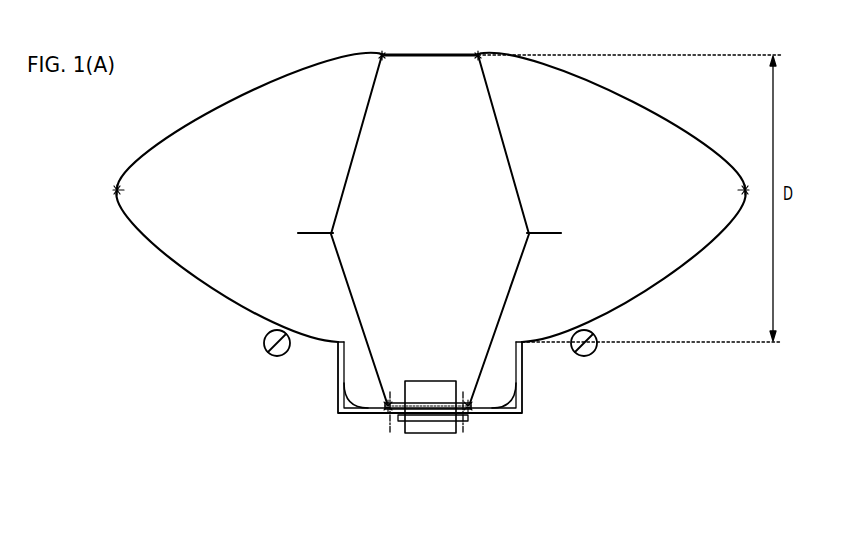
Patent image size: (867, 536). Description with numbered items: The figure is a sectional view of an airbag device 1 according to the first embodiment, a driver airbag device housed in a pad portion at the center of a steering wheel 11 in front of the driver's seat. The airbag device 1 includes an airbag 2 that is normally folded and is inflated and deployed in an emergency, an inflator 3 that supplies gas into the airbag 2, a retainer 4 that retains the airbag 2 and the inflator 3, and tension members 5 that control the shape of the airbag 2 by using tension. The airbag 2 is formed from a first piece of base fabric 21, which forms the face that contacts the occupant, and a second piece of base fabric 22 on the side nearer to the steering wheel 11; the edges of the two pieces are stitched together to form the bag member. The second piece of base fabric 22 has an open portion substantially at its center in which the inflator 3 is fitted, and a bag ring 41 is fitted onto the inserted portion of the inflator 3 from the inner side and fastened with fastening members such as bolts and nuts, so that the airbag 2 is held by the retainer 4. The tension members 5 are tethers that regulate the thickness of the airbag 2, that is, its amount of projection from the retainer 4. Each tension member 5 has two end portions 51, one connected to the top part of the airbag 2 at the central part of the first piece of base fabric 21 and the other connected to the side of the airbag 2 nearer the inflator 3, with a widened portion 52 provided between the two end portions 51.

The airbag device 1 is at (207, 64).
The airbag 2 is at (652, 107).
The first piece of base fabric 21 is at (241, 97).
The second piece of base fabric 22 is at (191, 273).
The tension member for airbags 5 is at (350, 146).
The end portion 51 is at (431, 57).
The widened portion 52 is at (313, 233).
The steering wheel 11 is at (264, 344).
The retainer 4 is at (338, 385).
The bag ring 41 is at (393, 403).
The inflator 3 is at (431, 381).